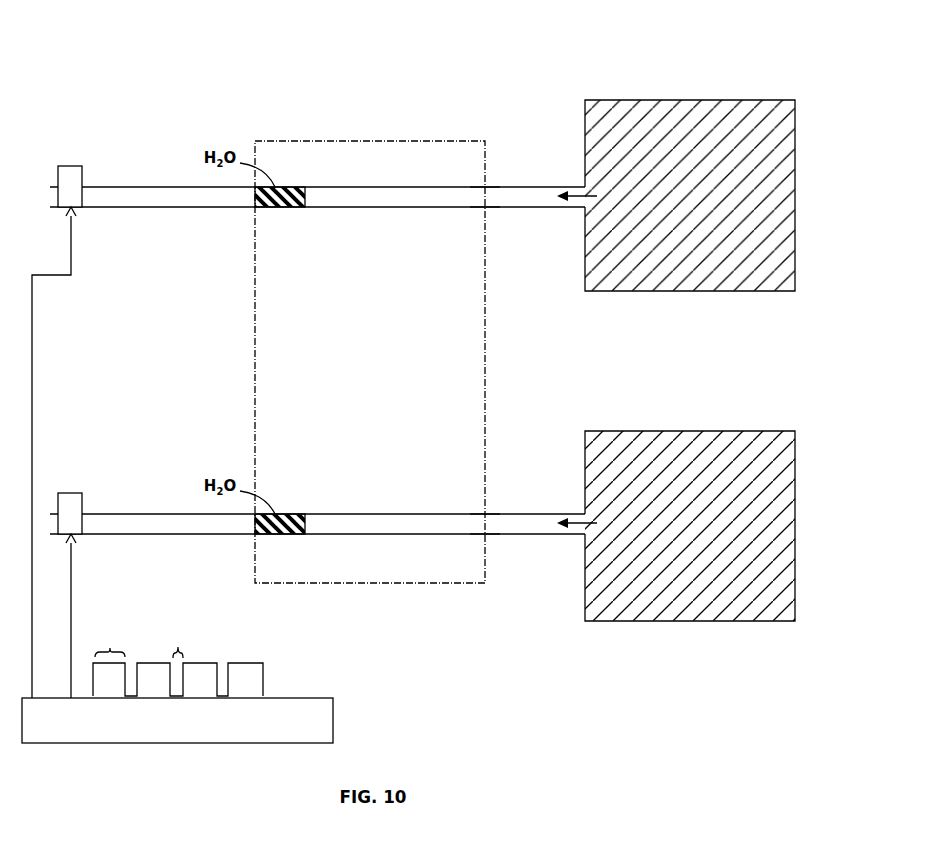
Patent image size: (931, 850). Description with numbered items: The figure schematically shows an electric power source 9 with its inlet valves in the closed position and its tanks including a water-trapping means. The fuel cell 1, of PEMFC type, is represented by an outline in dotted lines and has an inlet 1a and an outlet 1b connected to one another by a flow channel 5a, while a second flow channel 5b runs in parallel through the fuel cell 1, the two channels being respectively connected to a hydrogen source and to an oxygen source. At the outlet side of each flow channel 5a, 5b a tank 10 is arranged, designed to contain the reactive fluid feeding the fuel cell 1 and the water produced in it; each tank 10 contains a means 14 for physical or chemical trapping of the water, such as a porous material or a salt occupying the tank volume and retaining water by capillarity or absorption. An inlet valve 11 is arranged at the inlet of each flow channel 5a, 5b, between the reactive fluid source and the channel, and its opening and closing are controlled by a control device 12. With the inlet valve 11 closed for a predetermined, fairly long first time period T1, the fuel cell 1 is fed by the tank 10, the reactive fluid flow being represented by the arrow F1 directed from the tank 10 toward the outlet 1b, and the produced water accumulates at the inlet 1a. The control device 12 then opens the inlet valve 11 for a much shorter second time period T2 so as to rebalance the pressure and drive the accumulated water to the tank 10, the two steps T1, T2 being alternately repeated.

The electric power source 9 is at (146, 52).
The fuel cell 1 is at (385, 140).
The inlet 1a is at (258, 209).
The outlet 1b is at (485, 208).
The flow channel 5a is at (178, 535).
The second flow channel 5b is at (178, 208).
The tank 10 is at (667, 100).
The inlet valve 11 is at (72, 166).
The control device 12 is at (330, 716).
The means for physical or chemical trapping of water 14 is at (723, 137).
The arrow representing flow of reactive fluid F1 is at (580, 193).
The first time period T1 is at (112, 637).
The second time period T2 is at (183, 638).